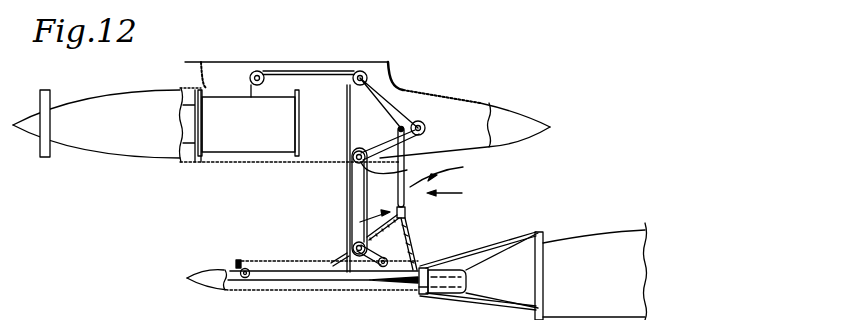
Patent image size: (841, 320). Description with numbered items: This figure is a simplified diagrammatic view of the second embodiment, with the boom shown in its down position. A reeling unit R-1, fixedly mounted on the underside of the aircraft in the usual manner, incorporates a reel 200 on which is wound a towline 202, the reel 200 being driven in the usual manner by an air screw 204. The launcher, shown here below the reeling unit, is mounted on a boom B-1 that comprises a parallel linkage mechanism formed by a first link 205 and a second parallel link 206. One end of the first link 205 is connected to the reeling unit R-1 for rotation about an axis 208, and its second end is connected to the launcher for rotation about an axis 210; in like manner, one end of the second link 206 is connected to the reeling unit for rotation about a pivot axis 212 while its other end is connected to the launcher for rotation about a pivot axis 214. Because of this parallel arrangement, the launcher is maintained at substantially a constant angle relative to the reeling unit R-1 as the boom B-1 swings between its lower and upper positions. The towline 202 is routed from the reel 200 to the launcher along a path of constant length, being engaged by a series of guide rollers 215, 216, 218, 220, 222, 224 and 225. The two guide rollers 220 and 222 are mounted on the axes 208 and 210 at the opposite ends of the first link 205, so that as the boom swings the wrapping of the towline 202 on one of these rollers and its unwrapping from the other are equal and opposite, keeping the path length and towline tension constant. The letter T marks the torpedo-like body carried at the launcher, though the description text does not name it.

The reel 200 is at (257, 137).
The towline 202 is at (307, 71).
The air screw 204 is at (48, 100).
The first link 205 is at (352, 207).
The second parallel link 206 is at (454, 173).
The axis 208 is at (360, 163).
The axis 210 is at (352, 250).
The pivot axis 212 is at (402, 125).
The pivot axis 214 is at (407, 220).
The guide roller 215 is at (259, 72).
The guide roller 216 is at (362, 72).
The guide roller 218 is at (426, 128).
The guide roller 220 is at (407, 170).
The guide roller 222 is at (363, 233).
The guide roller 224 is at (408, 256).
The guide roller 225 is at (249, 263).
The reeling unit R-1 is at (447, 93).
The boom B-1 is at (459, 192).
The torpedo T is at (218, 292).